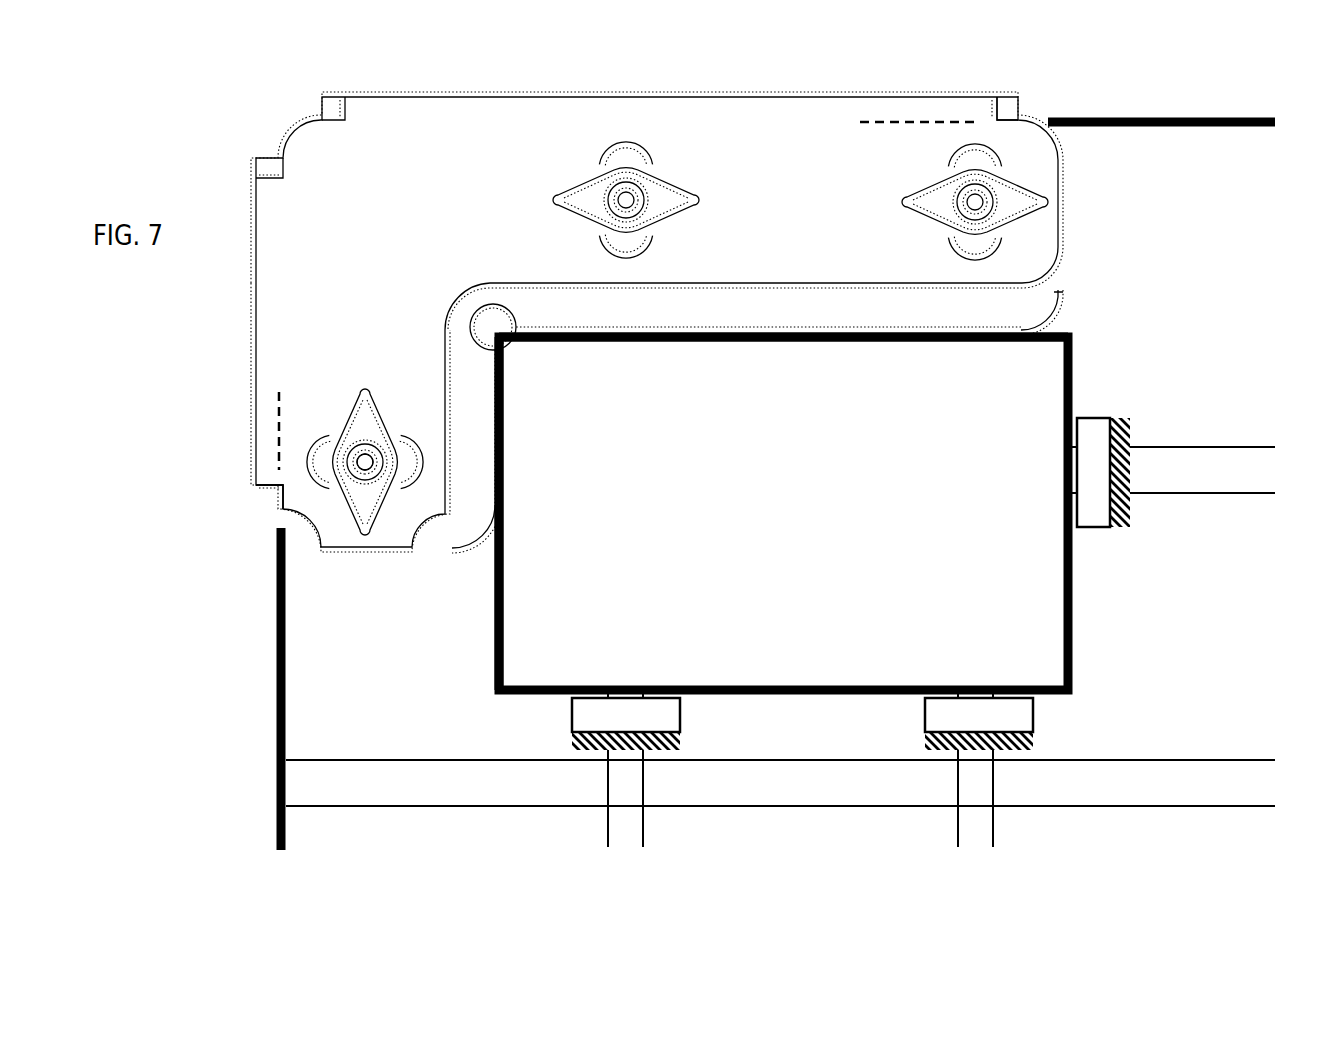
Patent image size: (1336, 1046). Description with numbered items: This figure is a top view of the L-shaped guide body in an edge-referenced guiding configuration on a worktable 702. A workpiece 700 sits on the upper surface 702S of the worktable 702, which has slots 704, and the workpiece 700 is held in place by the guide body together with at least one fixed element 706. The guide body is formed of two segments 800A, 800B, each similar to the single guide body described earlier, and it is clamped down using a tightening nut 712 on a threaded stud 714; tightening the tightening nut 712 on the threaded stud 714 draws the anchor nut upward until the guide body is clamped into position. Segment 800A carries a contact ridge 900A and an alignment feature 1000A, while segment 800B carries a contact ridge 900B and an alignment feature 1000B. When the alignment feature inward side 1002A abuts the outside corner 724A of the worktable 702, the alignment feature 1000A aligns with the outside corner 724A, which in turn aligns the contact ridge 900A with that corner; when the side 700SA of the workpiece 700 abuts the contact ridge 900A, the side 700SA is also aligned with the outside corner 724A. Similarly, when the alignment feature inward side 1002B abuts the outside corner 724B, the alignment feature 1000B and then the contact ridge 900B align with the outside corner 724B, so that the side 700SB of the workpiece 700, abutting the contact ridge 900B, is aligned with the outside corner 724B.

The workpiece 700 is at (1018, 391).
The side of the workpiece 700SA is at (677, 342).
The side of the workpiece 700SB is at (503, 570).
The worktable 702 is at (1291, 689).
The upper surface of the worktable 702S is at (1307, 724).
The slots 704 is at (635, 820).
The fixed element 706 is at (600, 713).
The tightening nut 712 is at (365, 510).
The threaded stud 714 is at (363, 460).
The outside corner 724A is at (1203, 117).
The outside corner 724B is at (280, 668).
The segment 800A is at (825, 246).
The segment 800B is at (387, 359).
The contact ridge 900A is at (815, 311).
The contact ridge 900B is at (457, 482).
The alignment feature 1000A is at (1008, 104).
The alignment feature 1000B is at (270, 495).
The alignment feature inward side 1002A is at (882, 122).
The alignment feature inward side 1002B is at (279, 422).